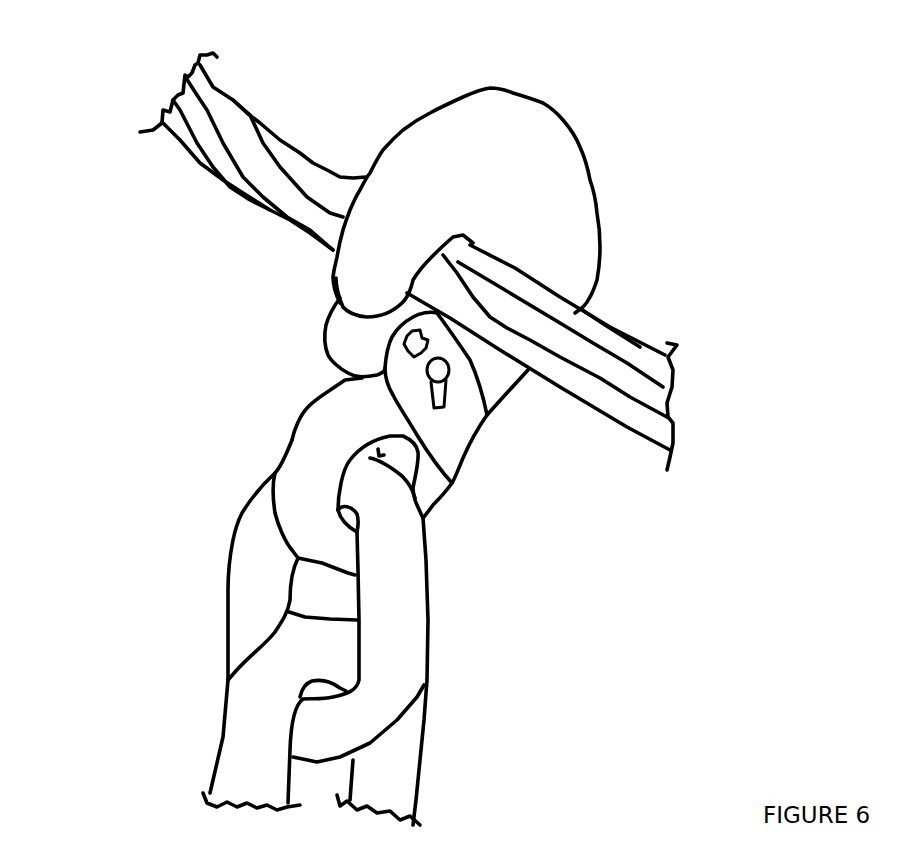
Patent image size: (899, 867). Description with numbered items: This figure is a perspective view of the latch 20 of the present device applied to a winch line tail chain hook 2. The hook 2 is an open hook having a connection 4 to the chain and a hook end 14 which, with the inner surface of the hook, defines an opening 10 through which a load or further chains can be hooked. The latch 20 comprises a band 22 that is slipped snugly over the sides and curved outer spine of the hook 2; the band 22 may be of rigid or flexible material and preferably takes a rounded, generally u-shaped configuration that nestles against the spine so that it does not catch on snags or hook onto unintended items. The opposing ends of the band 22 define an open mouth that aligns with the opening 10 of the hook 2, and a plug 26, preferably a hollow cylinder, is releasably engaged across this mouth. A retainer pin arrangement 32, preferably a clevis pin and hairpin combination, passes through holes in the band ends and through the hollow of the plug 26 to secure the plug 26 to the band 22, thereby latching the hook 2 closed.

The tail chain hook 2 is at (607, 148).
The connection 4 is at (403, 462).
The opening 10 is at (318, 307).
The hook end 14 is at (368, 290).
The latch 20 is at (490, 475).
The band 22 is at (477, 408).
The plug 26 is at (353, 347).
The retainer pin arrangement 32 is at (430, 360).